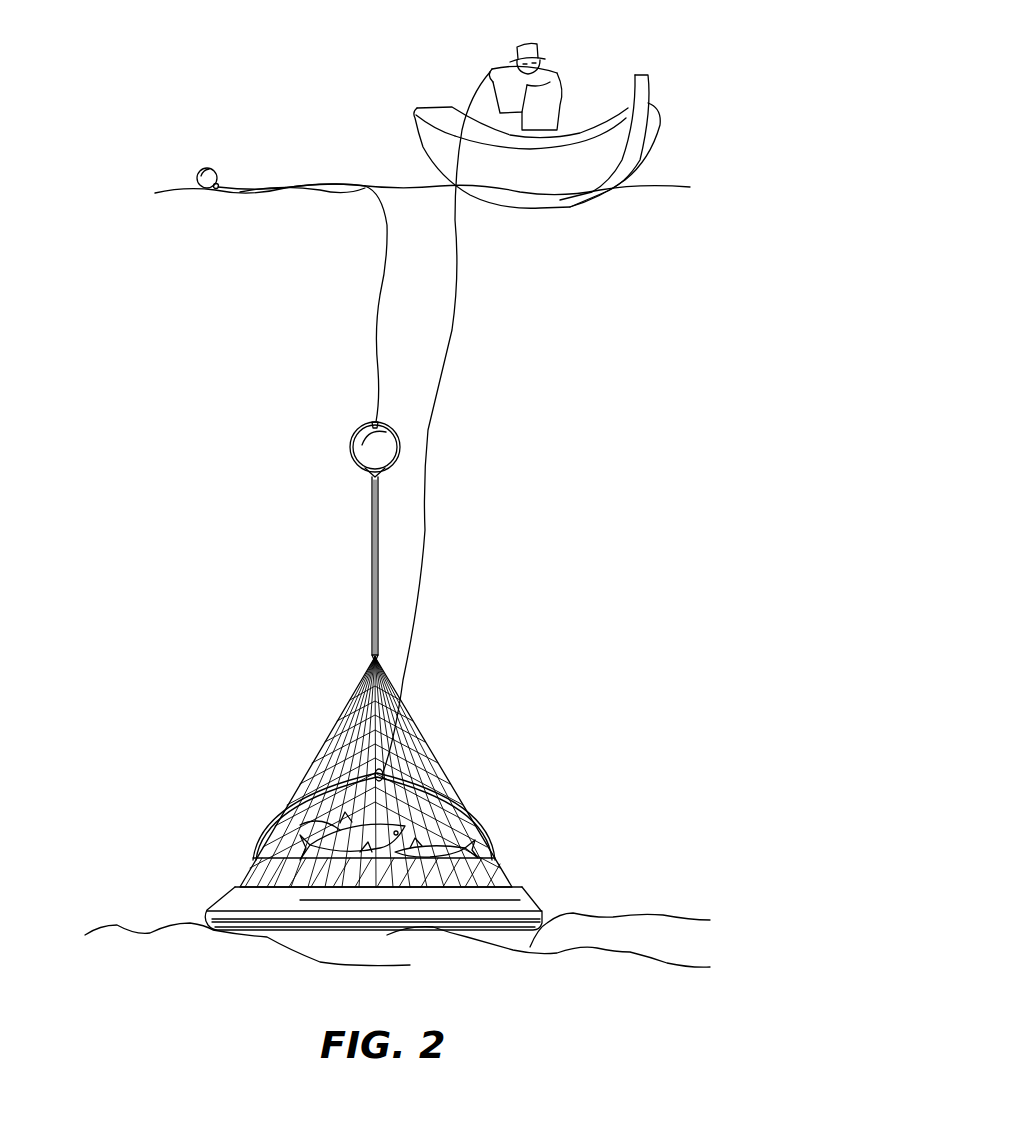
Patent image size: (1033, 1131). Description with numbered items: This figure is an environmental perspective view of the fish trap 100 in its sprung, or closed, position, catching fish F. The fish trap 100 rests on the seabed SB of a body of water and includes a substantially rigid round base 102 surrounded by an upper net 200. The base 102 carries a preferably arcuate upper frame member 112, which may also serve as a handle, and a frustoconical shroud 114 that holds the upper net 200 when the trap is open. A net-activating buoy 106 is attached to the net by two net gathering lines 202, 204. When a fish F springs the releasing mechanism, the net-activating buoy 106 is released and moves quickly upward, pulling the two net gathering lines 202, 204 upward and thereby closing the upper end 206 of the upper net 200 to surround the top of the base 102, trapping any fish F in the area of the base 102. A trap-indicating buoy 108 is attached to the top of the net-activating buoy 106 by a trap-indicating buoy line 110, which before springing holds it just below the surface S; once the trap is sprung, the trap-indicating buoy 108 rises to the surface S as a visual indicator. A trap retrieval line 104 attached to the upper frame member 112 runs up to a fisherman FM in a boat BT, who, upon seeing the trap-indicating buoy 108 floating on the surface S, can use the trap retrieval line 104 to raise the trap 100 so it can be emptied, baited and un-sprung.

The fish trap 100 is at (117, 88).
The base 102 is at (566, 730).
The trap retrieval line 104 is at (447, 368).
The net-activating buoy 106 is at (350, 433).
The trap-indicating buoy 108 is at (207, 165).
The trap-indicating buoy line 110 is at (383, 273).
The upper frame member 112 is at (427, 772).
The frustoconical shroud 114 is at (530, 908).
The upper net 200 is at (334, 720).
The net gathering line 202 is at (372, 600).
The net gathering line 204 is at (378, 568).
The upper end of the upper net 206 is at (348, 668).
The surface S is at (428, 208).
The seabed SB is at (680, 951).
The fish F is at (270, 821).
The fisherman FM is at (555, 63).
The boat BT is at (652, 103).